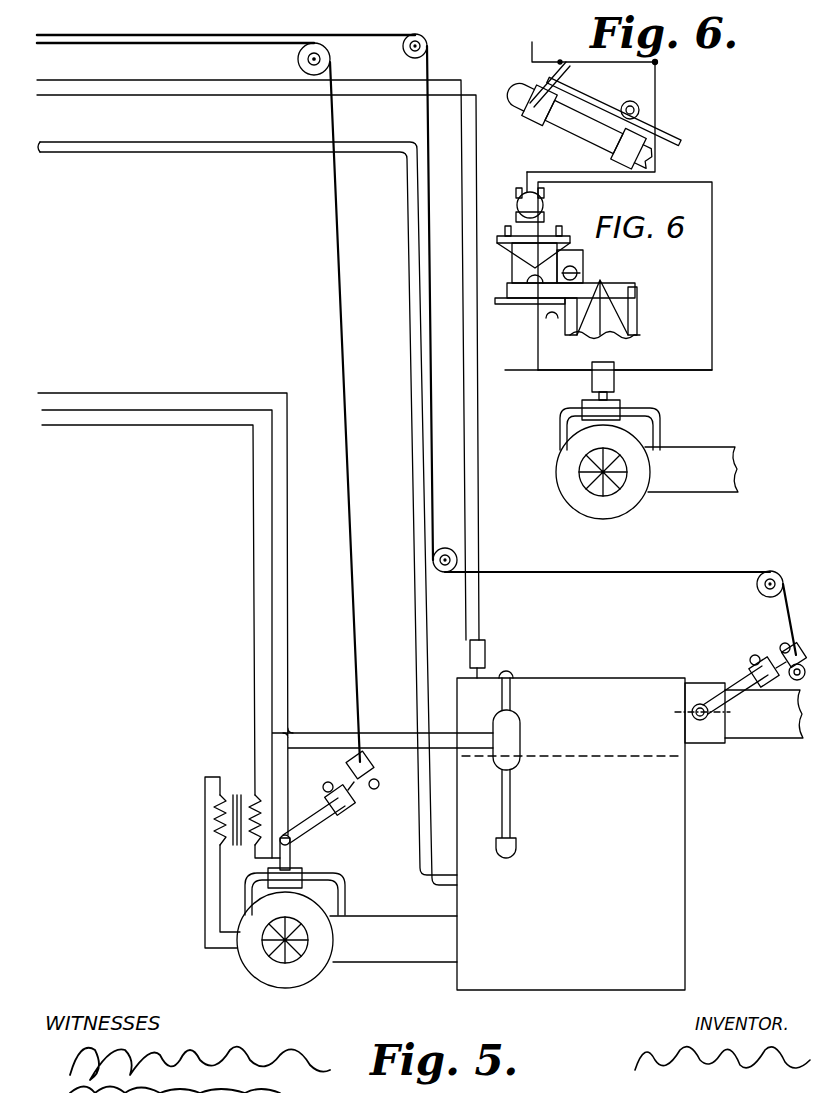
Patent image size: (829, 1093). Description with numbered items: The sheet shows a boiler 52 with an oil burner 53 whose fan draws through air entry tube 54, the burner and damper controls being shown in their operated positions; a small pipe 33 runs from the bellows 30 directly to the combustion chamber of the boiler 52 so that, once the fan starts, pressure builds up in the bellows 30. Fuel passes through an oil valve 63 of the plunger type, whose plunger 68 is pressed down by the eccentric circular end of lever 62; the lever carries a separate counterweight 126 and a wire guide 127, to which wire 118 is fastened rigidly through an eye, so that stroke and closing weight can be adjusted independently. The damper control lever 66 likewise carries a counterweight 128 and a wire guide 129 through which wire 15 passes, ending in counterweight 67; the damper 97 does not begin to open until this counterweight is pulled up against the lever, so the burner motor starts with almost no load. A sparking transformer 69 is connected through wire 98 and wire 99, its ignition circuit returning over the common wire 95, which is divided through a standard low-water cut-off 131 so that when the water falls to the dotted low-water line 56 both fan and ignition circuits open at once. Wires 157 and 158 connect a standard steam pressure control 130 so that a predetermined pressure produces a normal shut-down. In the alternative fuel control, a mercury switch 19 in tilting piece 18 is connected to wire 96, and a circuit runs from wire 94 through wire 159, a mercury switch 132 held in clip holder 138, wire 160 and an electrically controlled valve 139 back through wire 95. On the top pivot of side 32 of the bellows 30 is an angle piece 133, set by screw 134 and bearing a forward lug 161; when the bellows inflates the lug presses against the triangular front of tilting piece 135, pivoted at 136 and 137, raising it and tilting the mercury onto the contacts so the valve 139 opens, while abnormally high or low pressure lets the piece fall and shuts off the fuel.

In FIG. 5, the wire 15 is at (769, 598).
In FIG. 6, the tilting piece 18 is at (623, 113).
In FIG. 6, the mercury switch 19 is at (565, 143).
In FIG. 6, the bellows 30 is at (620, 332).
In FIG. 6, the side of bellows 32 is at (565, 330).
In FIG. 5, the pipe 33 is at (76, 152).
In FIG. 5, the boiler 52 is at (685, 919).
In FIG. 5, the oil burner 53 is at (318, 965).
In FIG. 6, the oil burner 53 is at (634, 497).
In FIG. 5, the air entry tube 54 is at (425, 962).
In FIG. 5, the low-water line 56 is at (681, 760).
In FIG. 5, the lever 62 is at (318, 812).
In FIG. 5, the oil valve 63 is at (305, 878).
In FIG. 5, the damper control lever 66 is at (742, 680).
In FIG. 5, the counterweight 67 is at (807, 677).
In FIG. 5, the plunger 68 is at (291, 855).
In FIG. 5, the sparking transformer 69 is at (233, 859).
In FIG. 5, the wire 94 is at (265, 604).
In FIG. 6, the wire 94 is at (658, 64).
In FIG. 5, the wire 95 is at (60, 425).
In FIG. 6, the wire 95 is at (565, 372).
In FIG. 6, the wire 96 is at (532, 48).
In FIG. 5, the damper 97 is at (700, 704).
In FIG. 5, the wire 98 is at (100, 425).
In FIG. 5, the wire 99 is at (255, 859).
In FIG. 5, the wire 118 is at (62, 43).
In FIG. 5, the counterweight 126 is at (346, 800).
In FIG. 5, the wire guide 127 is at (369, 769).
In FIG. 5, the counterweight 128 is at (766, 662).
In FIG. 5, the wire guide 129 is at (797, 656).
In FIG. 5, the steam pressure control 130 is at (486, 652).
In FIG. 5, the low-water cut-off 131 is at (512, 738).
In FIG. 6, the mercury switch 132 is at (545, 210).
In FIG. 6, the angle piece 133 is at (580, 268).
In FIG. 6, the screw 134 is at (578, 276).
In FIG. 6, the tilting piece 135 is at (562, 244).
In FIG. 6, the pivot 136 is at (510, 232).
In FIG. 6, the pivot 137 is at (556, 236).
In FIG. 6, the clip holder 138 is at (541, 193).
In FIG. 6, the electrically controlled valve 139 is at (612, 386).
In FIG. 5, the wire 157 is at (104, 75).
In FIG. 5, the wire 158 is at (100, 95).
In FIG. 6, the wire 159 is at (660, 118).
In FIG. 6, the wire 160 is at (712, 269).
In FIG. 6, the lug 161 is at (585, 263).